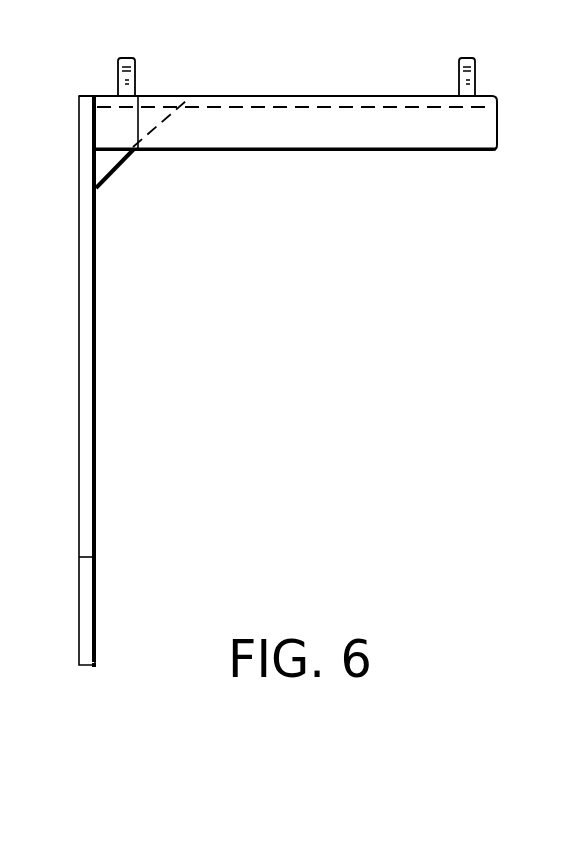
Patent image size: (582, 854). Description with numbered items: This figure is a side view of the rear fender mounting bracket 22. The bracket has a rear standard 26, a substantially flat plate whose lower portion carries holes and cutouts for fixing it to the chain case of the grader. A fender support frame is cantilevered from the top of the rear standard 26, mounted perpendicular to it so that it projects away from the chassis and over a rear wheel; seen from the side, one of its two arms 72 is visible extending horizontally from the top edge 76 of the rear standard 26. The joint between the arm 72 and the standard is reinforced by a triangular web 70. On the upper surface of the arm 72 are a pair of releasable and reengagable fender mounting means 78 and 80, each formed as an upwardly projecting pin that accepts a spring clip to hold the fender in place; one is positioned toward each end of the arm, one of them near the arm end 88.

The rear fender mounting bracket 22 is at (265, 352).
The rear standard 26 is at (96, 363).
The triangular web 70 is at (107, 163).
The arm 72 is at (338, 137).
The top edge 76 is at (80, 94).
The fender mounting means 78 is at (136, 72).
The fender mounting means 80 is at (458, 63).
The end of arm 88 is at (498, 122).